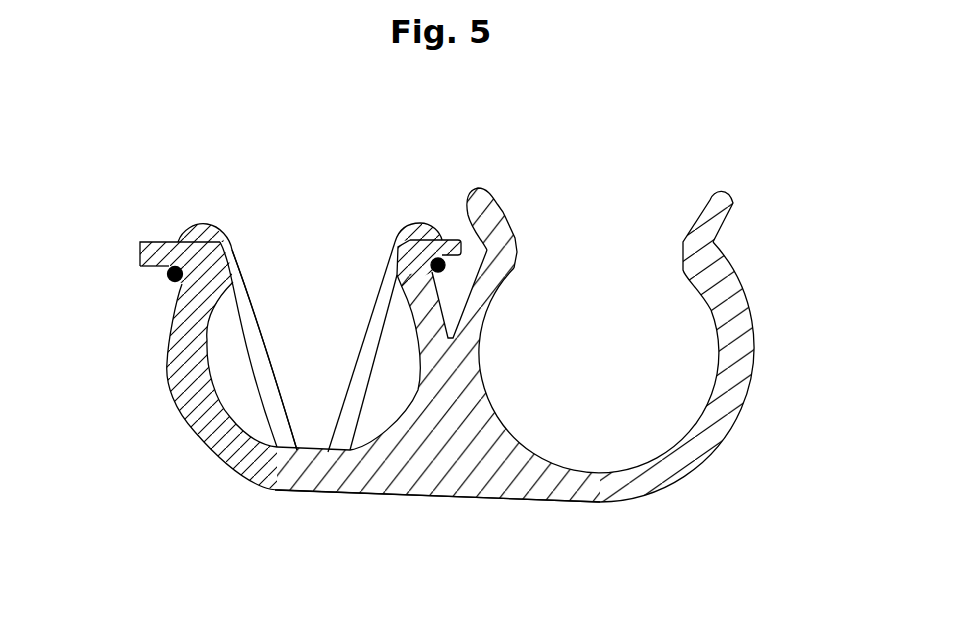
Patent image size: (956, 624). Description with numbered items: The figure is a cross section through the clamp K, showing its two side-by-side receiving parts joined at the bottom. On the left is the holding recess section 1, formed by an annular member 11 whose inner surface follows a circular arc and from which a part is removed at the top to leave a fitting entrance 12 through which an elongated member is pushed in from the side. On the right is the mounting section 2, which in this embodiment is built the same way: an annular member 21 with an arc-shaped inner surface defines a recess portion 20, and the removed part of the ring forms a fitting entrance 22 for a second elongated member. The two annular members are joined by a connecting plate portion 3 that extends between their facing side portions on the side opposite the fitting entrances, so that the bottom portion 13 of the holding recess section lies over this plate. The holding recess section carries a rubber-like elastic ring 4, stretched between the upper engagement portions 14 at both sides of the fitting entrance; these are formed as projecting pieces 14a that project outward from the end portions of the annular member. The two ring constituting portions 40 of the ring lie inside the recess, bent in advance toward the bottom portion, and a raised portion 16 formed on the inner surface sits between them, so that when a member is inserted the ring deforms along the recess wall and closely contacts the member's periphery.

The holding recess section 1 is at (208, 450).
The mounting section 2 is at (735, 325).
The annular member 21 is at (677, 372).
The fitting entrance 22 is at (617, 263).
The recess portion 20 is at (613, 443).
The connecting plate portion 3 is at (435, 482).
The rubber-like elastic ring 4 is at (258, 365).
The ring constituting portions 40 is at (264, 350).
The annular member 11 is at (167, 373).
The fitting entrance 12 is at (321, 283).
The bottom portion 13 is at (305, 480).
The upper engagement portions 14 is at (178, 240).
The projecting pieces 14a is at (307, 270).
The raised portion 16 is at (200, 343).
The clamp K is at (483, 182).